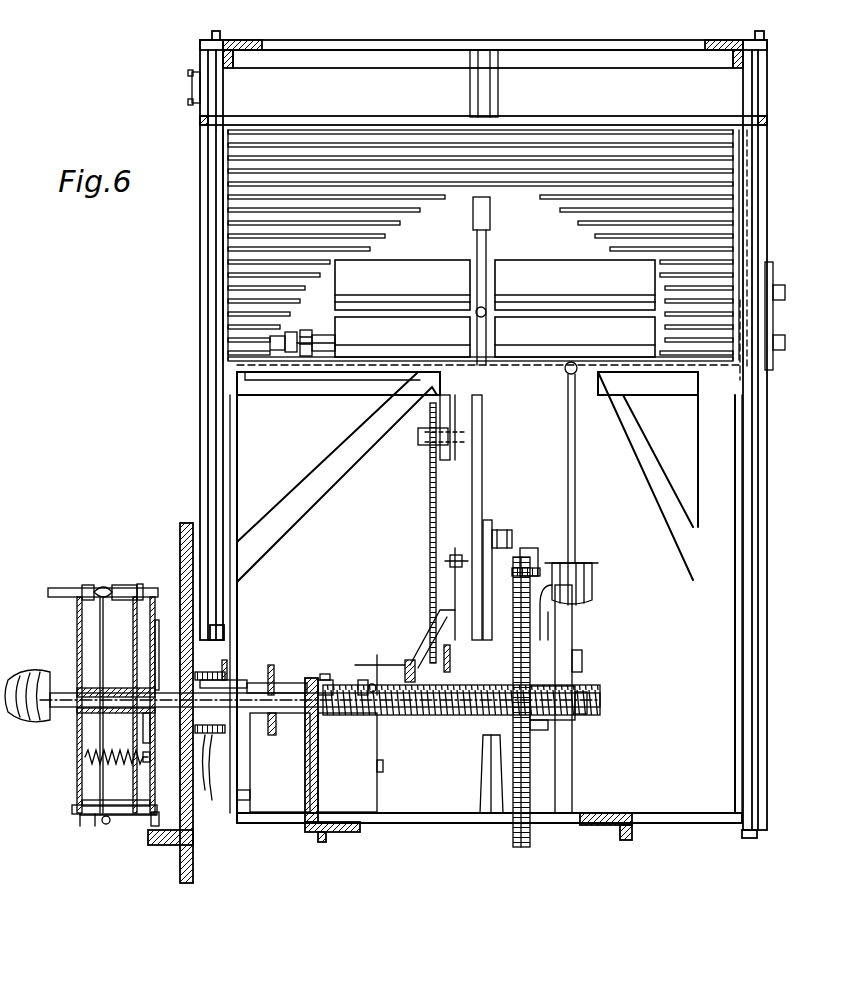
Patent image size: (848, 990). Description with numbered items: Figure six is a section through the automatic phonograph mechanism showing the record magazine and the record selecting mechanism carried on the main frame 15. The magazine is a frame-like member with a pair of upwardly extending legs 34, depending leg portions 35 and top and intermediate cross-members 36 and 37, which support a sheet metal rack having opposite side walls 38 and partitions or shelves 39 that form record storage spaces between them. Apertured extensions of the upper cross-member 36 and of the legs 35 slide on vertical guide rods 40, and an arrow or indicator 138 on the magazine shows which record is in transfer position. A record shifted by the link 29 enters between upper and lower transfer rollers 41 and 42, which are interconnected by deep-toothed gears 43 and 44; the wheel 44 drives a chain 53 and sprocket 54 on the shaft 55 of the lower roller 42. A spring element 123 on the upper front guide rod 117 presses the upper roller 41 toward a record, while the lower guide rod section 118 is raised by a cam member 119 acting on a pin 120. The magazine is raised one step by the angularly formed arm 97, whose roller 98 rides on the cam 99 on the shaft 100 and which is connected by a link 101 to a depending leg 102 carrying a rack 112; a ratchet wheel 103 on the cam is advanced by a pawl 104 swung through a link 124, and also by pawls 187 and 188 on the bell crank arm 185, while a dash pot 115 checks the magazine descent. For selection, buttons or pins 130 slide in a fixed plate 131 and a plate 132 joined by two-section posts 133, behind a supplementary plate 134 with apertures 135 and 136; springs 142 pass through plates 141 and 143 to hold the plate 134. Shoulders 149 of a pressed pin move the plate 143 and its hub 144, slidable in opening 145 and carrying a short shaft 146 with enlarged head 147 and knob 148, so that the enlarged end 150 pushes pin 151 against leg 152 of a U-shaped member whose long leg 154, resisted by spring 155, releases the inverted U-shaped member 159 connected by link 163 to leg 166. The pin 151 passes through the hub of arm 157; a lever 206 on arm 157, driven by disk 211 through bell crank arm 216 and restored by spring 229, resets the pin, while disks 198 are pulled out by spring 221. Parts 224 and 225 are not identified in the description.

The main frame structure 15 is at (238, 42).
The link 29 is at (446, 668).
The upwardly extending legs 34 is at (210, 262).
The depending leg portions 35 is at (238, 456).
The top cross-member 36 is at (316, 120).
The intermediate cross-member 37 is at (334, 367).
The side walls 38 is at (232, 130).
The partitions or shelves 39 is at (365, 135).
The guide rods 40 is at (760, 205).
The upper record transfer roller 41 is at (541, 272).
The lower record transfer roller 42 is at (566, 372).
The gear 43 is at (770, 264).
The gear 44 is at (775, 368).
The chain 53 is at (314, 332).
The sprocket 54 is at (284, 334).
The shaft 55 is at (336, 345).
The angularly formed arm 97 is at (491, 527).
The roller 98 is at (506, 540).
The cam 99 is at (480, 752).
The shaft 100 is at (286, 695).
The link 101 is at (484, 492).
The depending leg 102 is at (420, 436).
The ratchet wheel 103 is at (520, 848).
The pawl 104 is at (572, 565).
The rack 112 is at (428, 512).
The dash pot 115 is at (595, 584).
The upper front guide rod section 117 is at (500, 95).
The lower front guide rod section 118 is at (481, 410).
The cam member 119 is at (428, 632).
The pin 120 is at (457, 556).
The spring element 123 is at (472, 240).
The link 124 is at (408, 660).
The selector pins 130 is at (52, 589).
The fixed plate 131 is at (157, 780).
The plate 132 is at (82, 816).
The connecting posts 133 is at (122, 822).
The supplementary plate 134 is at (77, 792).
The apertures 135 is at (77, 610).
The apertures 136 is at (77, 626).
The indicator 138 is at (190, 76).
The disk 141 is at (118, 803).
The springs 142 is at (118, 760).
The plate 143 is at (133, 632).
The hub 144 is at (118, 688).
The opening 145 is at (157, 660).
The short shaft 146 is at (58, 708).
The enlarged head 147 is at (158, 720).
The knob 148 is at (30, 684).
The shoulders 149 is at (136, 586).
The enlarged inner end portion 150 is at (140, 745).
The pin 151 is at (255, 683).
The leg 152 is at (272, 725).
The long leg 154 is at (320, 724).
The spring 155 is at (420, 718).
The arm 157 is at (210, 734).
The inverted U-shaped member 159 is at (252, 760).
The link 163 is at (362, 683).
The leg 166 is at (566, 640).
The bell crank arm 185 is at (556, 612).
The pawl 187 is at (525, 565).
The pawl 188 is at (542, 728).
The disk members 198 is at (238, 665).
The lever 206 is at (204, 750).
The disk 211 is at (226, 663).
The bell crank arm 216 is at (322, 682).
The spring 221 is at (210, 672).
The arm 224 is at (365, 664).
The pin 225 is at (376, 655).
The spring 229 is at (200, 783).